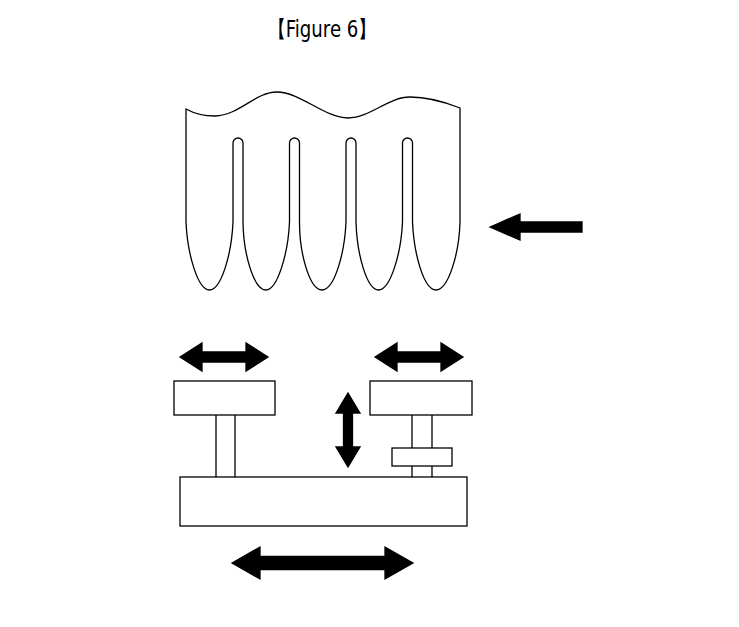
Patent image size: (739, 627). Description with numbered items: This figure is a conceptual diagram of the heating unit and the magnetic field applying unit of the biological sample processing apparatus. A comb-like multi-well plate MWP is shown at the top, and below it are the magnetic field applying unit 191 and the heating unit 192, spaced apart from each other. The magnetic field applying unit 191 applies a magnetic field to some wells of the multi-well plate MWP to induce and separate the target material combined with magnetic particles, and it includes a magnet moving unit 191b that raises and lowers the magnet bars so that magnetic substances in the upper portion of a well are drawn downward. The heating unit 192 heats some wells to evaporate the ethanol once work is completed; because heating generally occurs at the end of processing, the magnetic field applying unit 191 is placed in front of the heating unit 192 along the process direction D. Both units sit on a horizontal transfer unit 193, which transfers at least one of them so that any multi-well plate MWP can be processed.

The multi-well plate MWP is at (210, 191).
The process direction D is at (536, 214).
The magnetic field applying unit 191 is at (462, 401).
The magnet moving unit 191b is at (452, 455).
The heating unit 192 is at (185, 396).
The horizontal transfer unit 193 is at (185, 503).